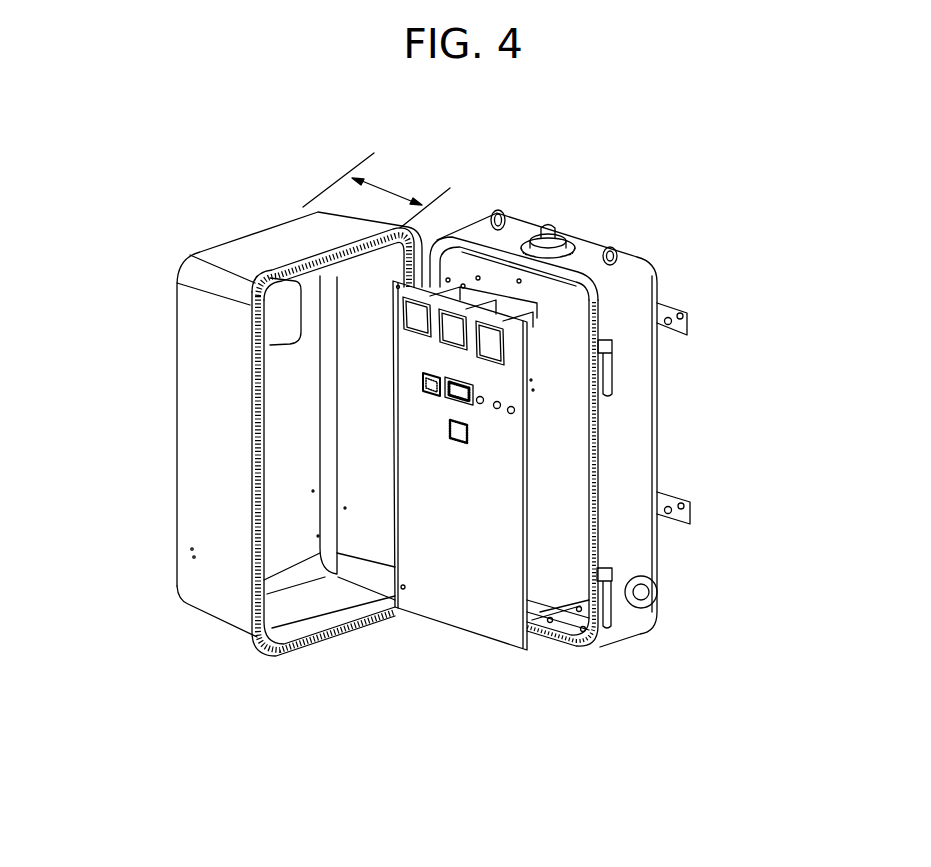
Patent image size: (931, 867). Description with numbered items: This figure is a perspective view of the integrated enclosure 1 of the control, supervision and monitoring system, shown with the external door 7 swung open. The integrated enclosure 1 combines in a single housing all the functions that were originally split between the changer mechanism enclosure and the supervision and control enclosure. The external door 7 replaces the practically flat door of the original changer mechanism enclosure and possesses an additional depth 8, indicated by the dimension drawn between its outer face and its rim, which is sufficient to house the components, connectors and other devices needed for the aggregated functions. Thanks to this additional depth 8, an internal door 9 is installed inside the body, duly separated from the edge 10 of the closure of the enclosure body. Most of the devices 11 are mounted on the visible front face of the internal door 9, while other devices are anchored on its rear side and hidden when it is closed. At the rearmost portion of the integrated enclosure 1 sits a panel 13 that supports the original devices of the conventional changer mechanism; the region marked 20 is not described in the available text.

The integrated enclosure 1 is at (611, 431).
The external door 7 is at (149, 441).
The additional depth 8 is at (431, 161).
The internal door 9 is at (487, 455).
The edge of the closure 10 is at (608, 525).
The devices 11 is at (497, 307).
The panel 13 is at (589, 308).
The housing back wall 20 is at (558, 505).